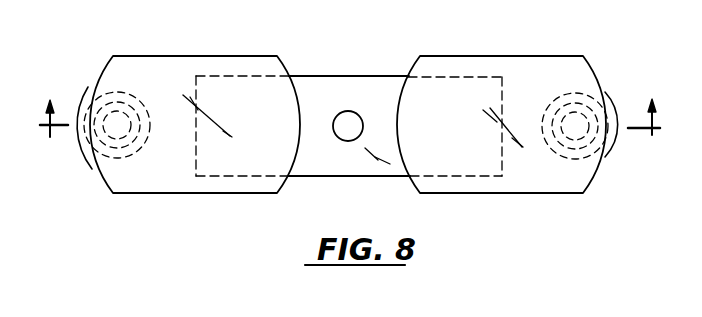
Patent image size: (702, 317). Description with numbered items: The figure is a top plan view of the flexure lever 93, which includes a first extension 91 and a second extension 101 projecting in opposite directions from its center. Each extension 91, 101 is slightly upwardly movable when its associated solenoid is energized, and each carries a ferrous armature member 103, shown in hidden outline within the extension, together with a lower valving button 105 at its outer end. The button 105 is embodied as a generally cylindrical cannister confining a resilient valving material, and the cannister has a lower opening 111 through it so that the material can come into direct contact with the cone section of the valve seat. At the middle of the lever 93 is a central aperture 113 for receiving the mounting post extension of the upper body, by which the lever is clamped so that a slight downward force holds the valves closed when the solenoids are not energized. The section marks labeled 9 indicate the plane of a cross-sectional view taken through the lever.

The section line of FIG. 9 is at (353, 116).
The first extension 91 is at (145, 198).
The flexure lever 93 is at (293, 192).
The second extension 101 is at (517, 197).
The ferrous armature member 103 is at (215, 185).
The lower valving button 105 is at (88, 87).
The lower opening 111 is at (117, 128).
The central aperture 113 is at (348, 111).